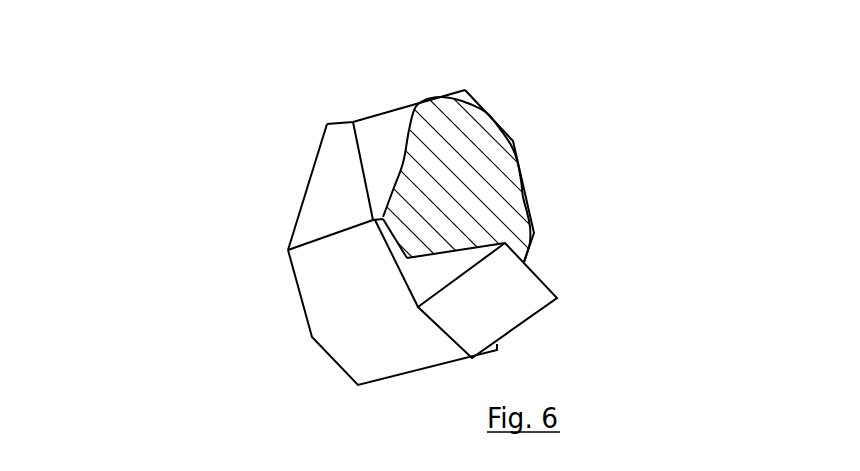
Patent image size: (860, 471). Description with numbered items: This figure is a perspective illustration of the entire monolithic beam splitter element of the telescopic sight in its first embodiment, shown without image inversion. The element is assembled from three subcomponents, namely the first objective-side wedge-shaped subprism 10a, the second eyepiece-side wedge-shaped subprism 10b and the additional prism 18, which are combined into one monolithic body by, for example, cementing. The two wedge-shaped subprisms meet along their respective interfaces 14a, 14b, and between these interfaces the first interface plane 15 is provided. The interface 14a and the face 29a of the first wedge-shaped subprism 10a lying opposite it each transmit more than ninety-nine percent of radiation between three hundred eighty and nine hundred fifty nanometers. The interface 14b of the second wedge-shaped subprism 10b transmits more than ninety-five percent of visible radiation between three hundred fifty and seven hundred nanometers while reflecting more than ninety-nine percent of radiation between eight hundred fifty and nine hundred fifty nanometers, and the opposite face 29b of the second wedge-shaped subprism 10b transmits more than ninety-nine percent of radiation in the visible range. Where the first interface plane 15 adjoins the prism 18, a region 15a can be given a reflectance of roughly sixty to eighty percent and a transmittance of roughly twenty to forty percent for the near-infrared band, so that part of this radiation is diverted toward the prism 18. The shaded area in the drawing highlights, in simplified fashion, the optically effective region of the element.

The first objective-side wedge-shaped subprism 10a is at (317, 210).
The second eyepiece-side wedge-shaped subprism 10b is at (377, 132).
The face of the first wedge-shaped subprism opposite the interface 29a is at (312, 169).
The face of the second wedge-shaped subprism opposite the interface 29b is at (477, 170).
The prism 18 is at (528, 303).
The interface of the first wedge-shaped subprism 14a is at (370, 210).
The interface of the second wedge-shaped subprism 14b is at (395, 238).
The first interface plane 15 is at (439, 238).
The region of the first interface adjoining the prism 15a is at (390, 273).